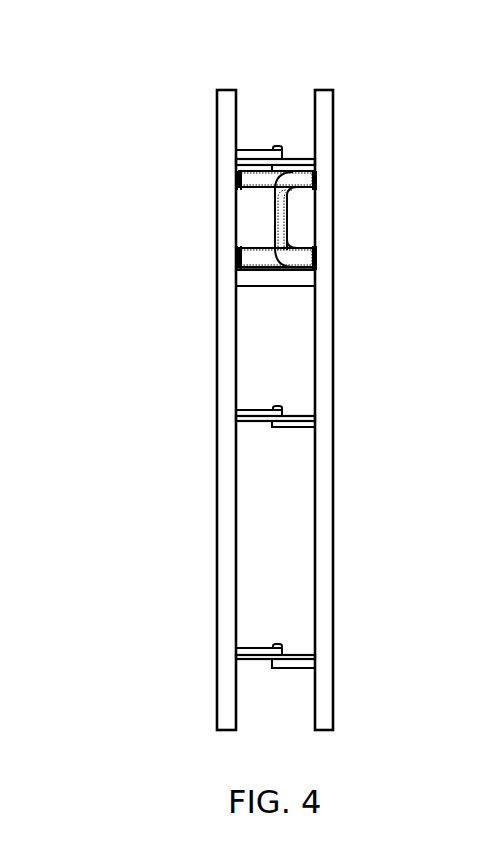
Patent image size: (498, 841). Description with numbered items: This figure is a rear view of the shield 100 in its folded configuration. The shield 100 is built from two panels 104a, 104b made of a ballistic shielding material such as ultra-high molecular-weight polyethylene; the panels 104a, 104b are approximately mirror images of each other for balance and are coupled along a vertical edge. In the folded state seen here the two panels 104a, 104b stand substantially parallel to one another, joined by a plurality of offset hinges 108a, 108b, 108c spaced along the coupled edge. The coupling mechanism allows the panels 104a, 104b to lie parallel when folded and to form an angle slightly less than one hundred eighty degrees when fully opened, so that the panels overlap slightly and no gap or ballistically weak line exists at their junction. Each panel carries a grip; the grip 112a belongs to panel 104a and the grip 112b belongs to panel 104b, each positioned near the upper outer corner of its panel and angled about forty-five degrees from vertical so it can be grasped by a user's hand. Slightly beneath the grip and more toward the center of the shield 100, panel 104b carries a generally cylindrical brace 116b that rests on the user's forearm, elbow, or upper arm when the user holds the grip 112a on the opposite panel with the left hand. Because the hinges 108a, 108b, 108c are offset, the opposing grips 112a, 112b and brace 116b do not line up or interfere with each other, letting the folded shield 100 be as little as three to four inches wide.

The shield 100 is at (118, 63).
The panel 104a is at (217, 711).
The panel 104b is at (334, 717).
The offset hinge 108a is at (282, 150).
The offset hinge 108b is at (305, 423).
The offset hinge 108c is at (279, 646).
The grip 112a is at (316, 183).
The grip 112b is at (240, 180).
The brace 116b is at (247, 280).